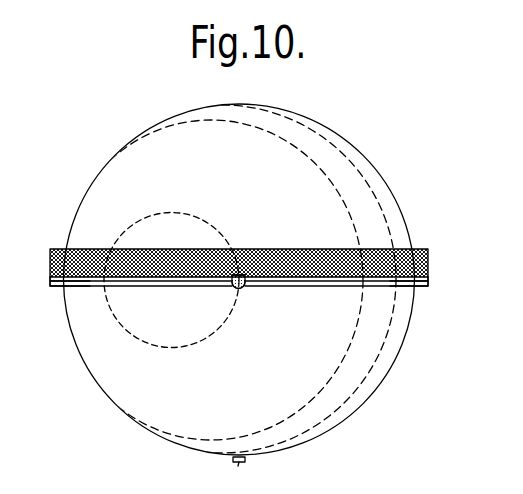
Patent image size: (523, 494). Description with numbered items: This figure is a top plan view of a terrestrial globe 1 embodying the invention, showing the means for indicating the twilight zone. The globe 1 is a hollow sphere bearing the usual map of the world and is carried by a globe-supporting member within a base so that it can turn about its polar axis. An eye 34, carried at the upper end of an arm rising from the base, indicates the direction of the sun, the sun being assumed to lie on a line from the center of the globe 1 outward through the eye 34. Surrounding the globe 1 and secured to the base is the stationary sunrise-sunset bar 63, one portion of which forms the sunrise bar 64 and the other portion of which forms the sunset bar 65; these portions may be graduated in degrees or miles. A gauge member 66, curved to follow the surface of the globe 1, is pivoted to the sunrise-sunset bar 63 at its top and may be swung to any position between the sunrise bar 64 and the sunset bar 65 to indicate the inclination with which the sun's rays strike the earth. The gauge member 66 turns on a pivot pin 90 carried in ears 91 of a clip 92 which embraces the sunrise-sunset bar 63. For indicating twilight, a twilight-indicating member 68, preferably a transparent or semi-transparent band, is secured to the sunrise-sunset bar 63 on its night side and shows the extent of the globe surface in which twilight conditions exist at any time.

The terrestrial globe 1 is at (83, 336).
The eye 34 is at (238, 466).
The sunrise-sunset bar 63 is at (315, 282).
The sunrise bar 64 is at (85, 281).
The sunset bar 65 is at (412, 283).
The gauge member 66 is at (167, 282).
The twilight-indicating member 68 is at (415, 256).
The pivot pin 90 is at (240, 288).
The ears 91 is at (245, 287).
The clip 92 is at (238, 274).